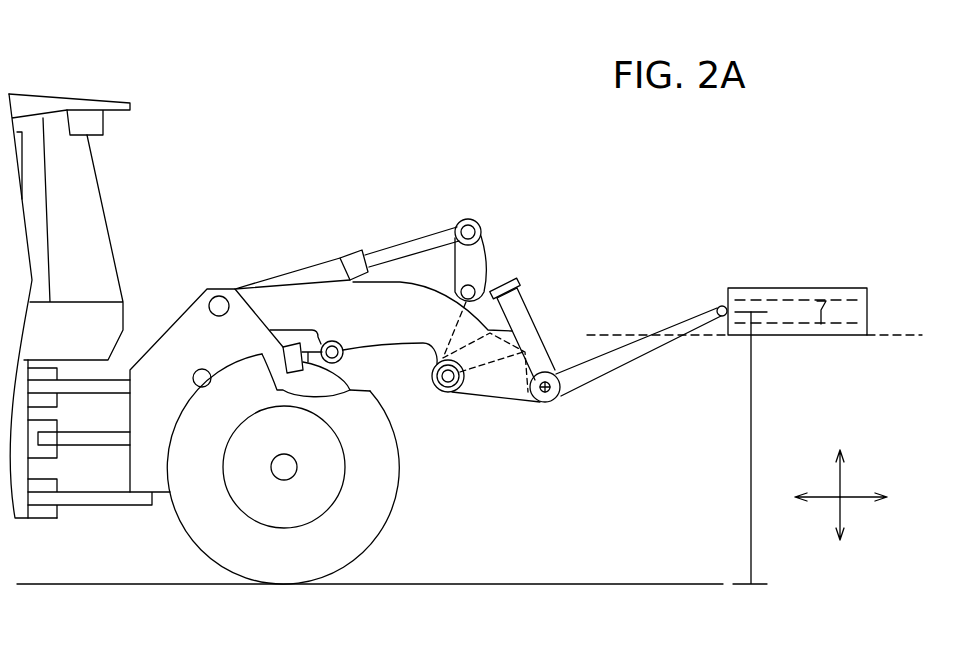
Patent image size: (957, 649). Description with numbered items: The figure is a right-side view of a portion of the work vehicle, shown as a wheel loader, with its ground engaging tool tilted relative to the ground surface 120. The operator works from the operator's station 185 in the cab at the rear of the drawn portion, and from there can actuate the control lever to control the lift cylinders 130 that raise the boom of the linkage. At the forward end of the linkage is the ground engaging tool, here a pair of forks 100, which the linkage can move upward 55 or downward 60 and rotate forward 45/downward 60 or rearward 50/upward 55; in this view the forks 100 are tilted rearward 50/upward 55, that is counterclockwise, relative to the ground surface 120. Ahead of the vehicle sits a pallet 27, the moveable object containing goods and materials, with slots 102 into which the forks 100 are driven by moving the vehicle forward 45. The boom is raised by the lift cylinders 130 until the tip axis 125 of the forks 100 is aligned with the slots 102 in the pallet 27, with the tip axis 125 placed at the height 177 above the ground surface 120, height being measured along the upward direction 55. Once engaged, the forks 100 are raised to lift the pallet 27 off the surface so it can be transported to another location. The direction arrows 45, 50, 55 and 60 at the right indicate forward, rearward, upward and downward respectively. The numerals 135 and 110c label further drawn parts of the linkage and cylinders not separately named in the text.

The operator's station 185 is at (113, 56).
The lift cylinders 130 is at (350, 391).
The boom cylinder 135 is at (337, 268).
The pair of forks 100 is at (629, 265).
The tilt cylinder 110c is at (558, 397).
The tip axis 125 is at (722, 306).
The pallet 27 is at (797, 265).
The slots 102 is at (832, 292).
The height 177 is at (751, 488).
The ground surface 120 is at (505, 584).
The rearward direction 50 is at (820, 490).
The upward direction 55 is at (843, 478).
The forward direction 45 is at (858, 505).
The downward direction 60 is at (832, 515).